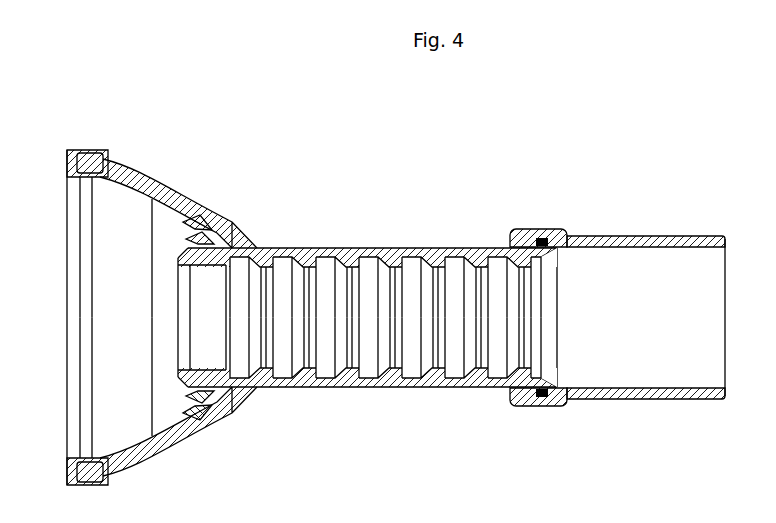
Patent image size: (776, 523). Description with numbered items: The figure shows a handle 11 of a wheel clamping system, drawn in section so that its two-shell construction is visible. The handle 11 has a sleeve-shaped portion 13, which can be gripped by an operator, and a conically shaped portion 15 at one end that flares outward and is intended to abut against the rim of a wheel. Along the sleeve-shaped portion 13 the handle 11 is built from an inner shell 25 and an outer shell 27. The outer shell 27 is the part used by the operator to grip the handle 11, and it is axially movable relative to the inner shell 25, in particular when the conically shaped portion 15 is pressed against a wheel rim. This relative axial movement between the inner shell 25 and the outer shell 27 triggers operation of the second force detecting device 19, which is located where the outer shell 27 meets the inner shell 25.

The handle 11 is at (477, 162).
The sleeve-shaped portion 13 is at (387, 407).
The conically shaped portion 15 is at (178, 196).
The second force detecting device 19 is at (543, 238).
The inner shell 25 is at (349, 256).
The outer shell 27 is at (654, 236).